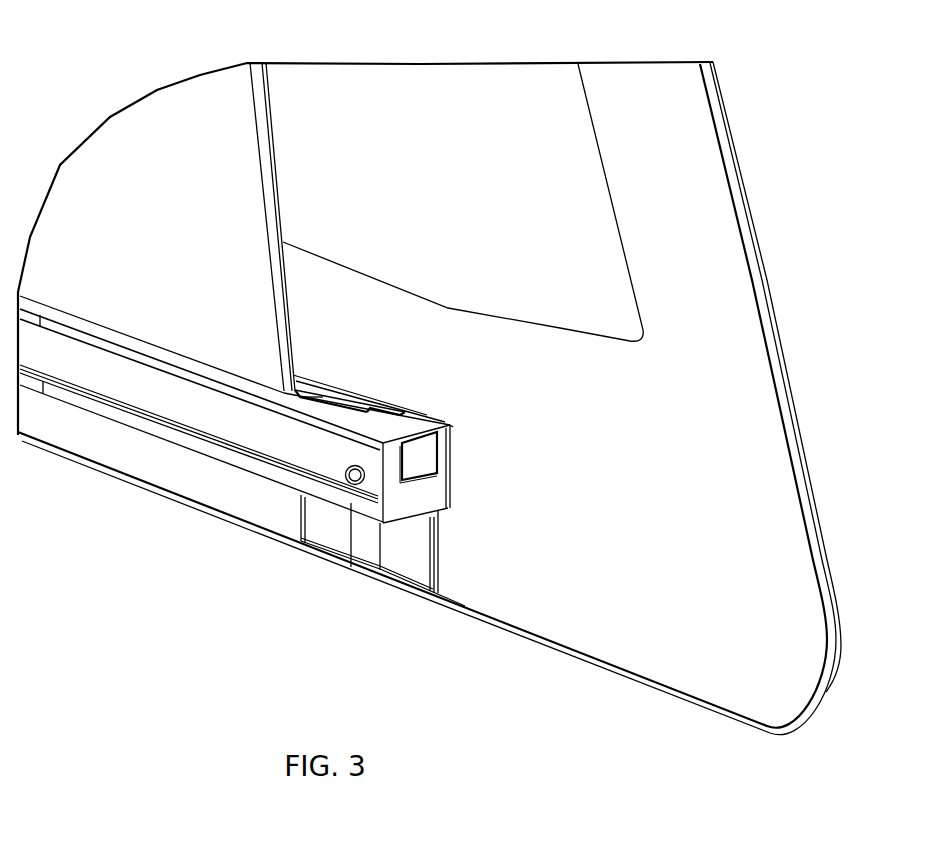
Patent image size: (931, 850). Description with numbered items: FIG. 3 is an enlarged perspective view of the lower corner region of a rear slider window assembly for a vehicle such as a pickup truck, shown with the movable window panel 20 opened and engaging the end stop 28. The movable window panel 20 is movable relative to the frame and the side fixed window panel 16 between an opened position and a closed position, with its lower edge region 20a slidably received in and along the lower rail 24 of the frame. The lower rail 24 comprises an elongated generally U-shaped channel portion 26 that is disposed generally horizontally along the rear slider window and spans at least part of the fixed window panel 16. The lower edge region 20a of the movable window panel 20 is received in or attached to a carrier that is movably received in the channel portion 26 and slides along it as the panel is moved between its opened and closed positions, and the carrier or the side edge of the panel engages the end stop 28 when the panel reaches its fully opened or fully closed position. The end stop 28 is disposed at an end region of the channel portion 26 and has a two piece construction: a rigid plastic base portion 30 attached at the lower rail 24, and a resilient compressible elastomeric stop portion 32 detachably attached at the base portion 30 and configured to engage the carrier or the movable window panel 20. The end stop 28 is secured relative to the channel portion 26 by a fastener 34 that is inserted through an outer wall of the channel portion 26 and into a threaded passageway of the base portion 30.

The side fixed window panel 16 is at (525, 98).
The movable window panel 20 is at (250, 218).
The lower edge region of the movable window panel 20a is at (288, 382).
The lower rail 24 is at (274, 522).
The channel portion 26 is at (238, 433).
The end stop 28 is at (405, 414).
The base portion 30 is at (422, 459).
The stop portion 32 is at (308, 395).
The fastener 34 is at (356, 480).